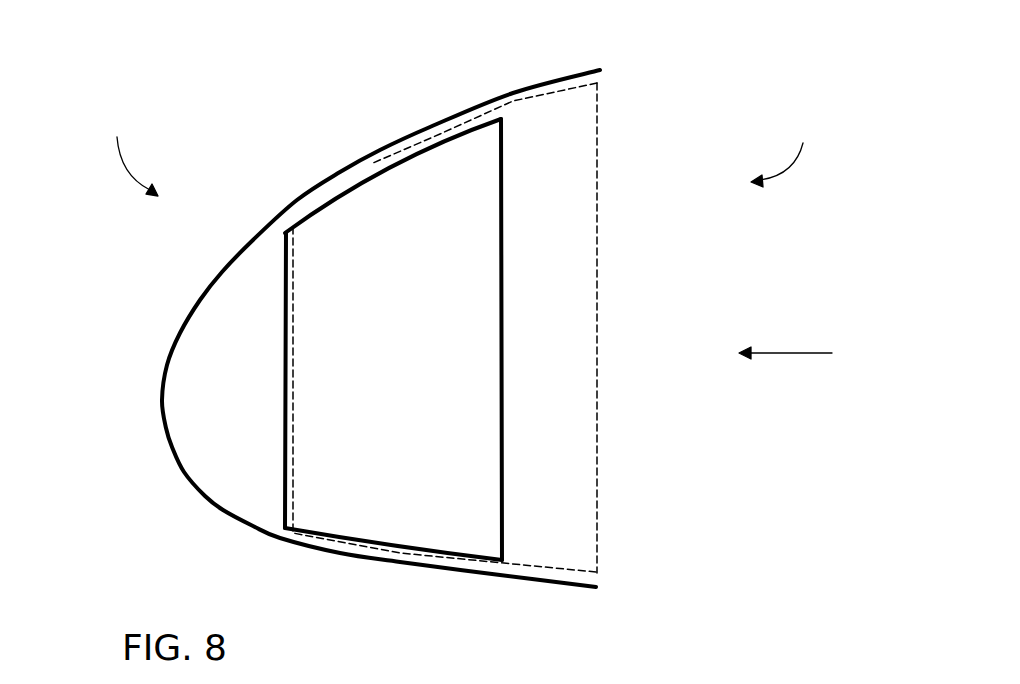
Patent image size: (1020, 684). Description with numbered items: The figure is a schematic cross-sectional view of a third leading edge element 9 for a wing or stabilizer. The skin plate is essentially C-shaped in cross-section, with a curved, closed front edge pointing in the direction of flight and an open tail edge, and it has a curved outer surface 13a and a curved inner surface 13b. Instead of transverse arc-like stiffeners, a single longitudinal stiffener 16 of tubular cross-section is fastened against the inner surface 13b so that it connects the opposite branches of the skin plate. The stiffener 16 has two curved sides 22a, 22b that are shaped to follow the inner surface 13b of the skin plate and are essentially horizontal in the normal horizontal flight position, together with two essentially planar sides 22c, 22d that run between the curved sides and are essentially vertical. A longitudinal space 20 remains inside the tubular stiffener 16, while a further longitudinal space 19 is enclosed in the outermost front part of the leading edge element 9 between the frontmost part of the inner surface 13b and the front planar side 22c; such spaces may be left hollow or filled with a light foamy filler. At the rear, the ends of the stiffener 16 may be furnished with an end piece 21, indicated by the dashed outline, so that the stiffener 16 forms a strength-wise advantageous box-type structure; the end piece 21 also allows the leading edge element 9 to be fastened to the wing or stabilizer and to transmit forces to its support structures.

The leading edge element 9 is at (230, 133).
The outer surface 13a is at (277, 543).
The inner surface 13b is at (572, 129).
The stiffener 16 is at (545, 358).
The longitudinal space 19 is at (247, 403).
The longitudinal space 20 is at (400, 354).
The end piece 21 is at (597, 485).
The curved side 22a is at (361, 167).
The curved side 22b is at (422, 548).
The planar side 22c is at (280, 313).
The planar side 22d is at (505, 262).